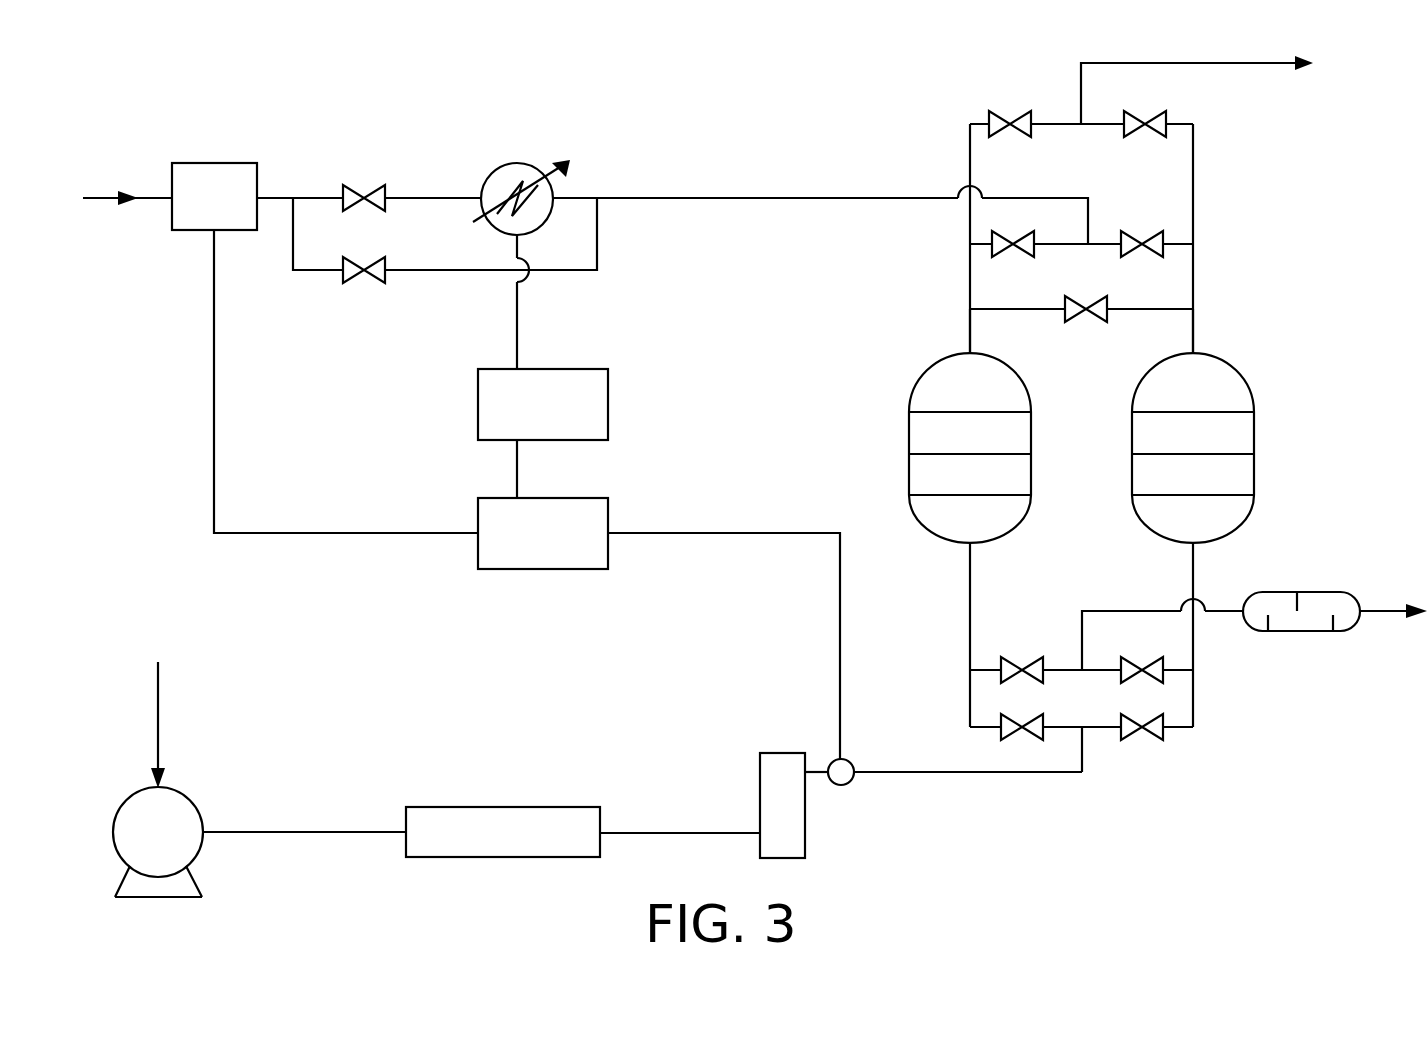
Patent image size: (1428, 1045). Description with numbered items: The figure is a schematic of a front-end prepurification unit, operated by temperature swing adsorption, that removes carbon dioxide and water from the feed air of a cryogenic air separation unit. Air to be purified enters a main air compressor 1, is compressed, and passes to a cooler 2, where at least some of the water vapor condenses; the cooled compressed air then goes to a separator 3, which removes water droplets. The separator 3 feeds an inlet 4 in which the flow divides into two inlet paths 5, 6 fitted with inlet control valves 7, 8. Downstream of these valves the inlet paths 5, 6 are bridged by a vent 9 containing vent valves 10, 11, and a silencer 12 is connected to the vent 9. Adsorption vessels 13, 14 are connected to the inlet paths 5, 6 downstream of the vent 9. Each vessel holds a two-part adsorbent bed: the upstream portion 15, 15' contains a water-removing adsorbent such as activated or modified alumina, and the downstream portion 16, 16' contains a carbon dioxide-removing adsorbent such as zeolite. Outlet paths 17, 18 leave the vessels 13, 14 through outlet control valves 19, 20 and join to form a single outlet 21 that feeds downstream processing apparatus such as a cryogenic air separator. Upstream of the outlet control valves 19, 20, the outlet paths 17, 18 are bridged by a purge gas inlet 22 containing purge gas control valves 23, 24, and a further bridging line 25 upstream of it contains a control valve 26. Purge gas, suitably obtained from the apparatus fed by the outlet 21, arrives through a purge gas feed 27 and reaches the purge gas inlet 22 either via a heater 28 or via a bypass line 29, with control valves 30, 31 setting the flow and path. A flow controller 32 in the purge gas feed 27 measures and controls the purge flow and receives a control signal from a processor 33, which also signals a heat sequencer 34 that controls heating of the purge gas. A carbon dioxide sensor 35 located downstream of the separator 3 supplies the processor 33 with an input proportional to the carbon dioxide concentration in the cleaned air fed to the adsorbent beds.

The main air compressor 1 is at (199, 809).
The cooler 2 is at (508, 857).
The separator 3 is at (805, 834).
The inlet 4 is at (1082, 750).
The inlet path 5 is at (970, 698).
The inlet path 6 is at (1193, 698).
The inlet control valve 7 is at (1022, 727).
The inlet control valve 8 is at (1151, 740).
The vent 9 is at (1062, 672).
The vent valve 10 is at (1015, 659).
The vent valve 11 is at (1151, 661).
The silencer 12 is at (1293, 631).
The adsorption vessel 13 is at (922, 520).
The adsorption vessel 14 is at (1250, 510).
The upstream portion of adsorbent bed 15 is at (938, 474).
The upstream portion of adsorbent bed 15' is at (1227, 474).
The downstream portion of adsorbent bed 16 is at (934, 429).
The downstream portion of adsorbent bed 16' is at (1227, 429).
The outlet path 17 is at (970, 127).
The outlet path 18 is at (1193, 151).
The outlet control valve 19 is at (1001, 112).
The outlet control valve 20 is at (1151, 114).
The outlet 21 is at (1240, 63).
The purge gas inlet 22 is at (1056, 245).
The purge gas control valve 23 is at (1021, 257).
The purge gas control valve 24 is at (1136, 230).
The bridging line 25 is at (1018, 311).
The control valve 26 is at (1090, 322).
The purge gas feed 27 is at (166, 191).
The heater 28 is at (517, 163).
The bypass line 29 is at (433, 272).
The control valve 30 is at (372, 187).
The control valve 31 is at (362, 284).
The flow controller 32 is at (213, 163).
The processor 33 is at (527, 569).
The heat sequencer 34 is at (608, 399).
The carbon dioxide sensor 35 is at (851, 763).